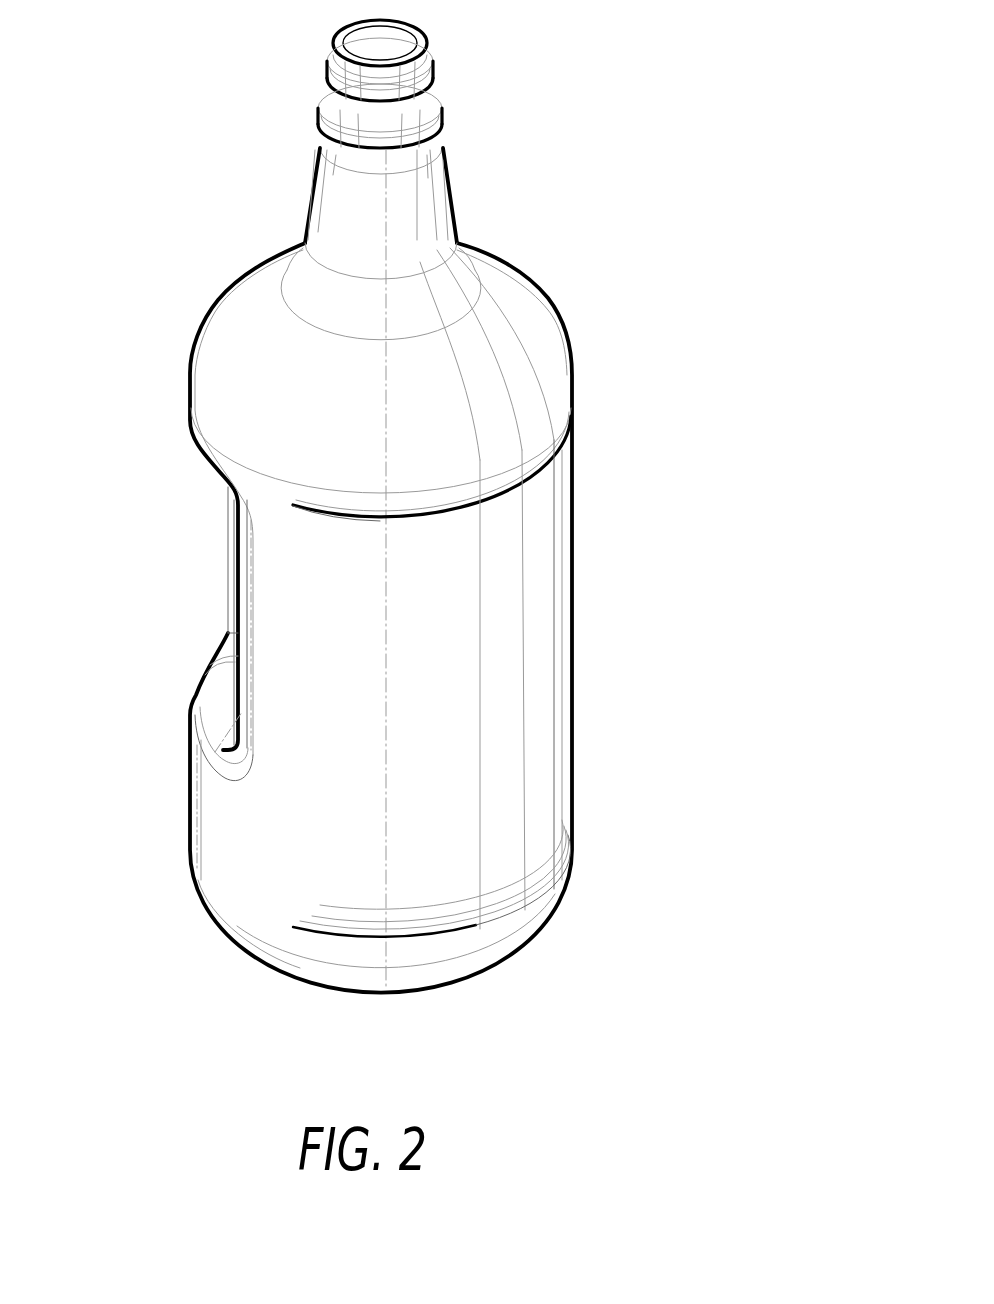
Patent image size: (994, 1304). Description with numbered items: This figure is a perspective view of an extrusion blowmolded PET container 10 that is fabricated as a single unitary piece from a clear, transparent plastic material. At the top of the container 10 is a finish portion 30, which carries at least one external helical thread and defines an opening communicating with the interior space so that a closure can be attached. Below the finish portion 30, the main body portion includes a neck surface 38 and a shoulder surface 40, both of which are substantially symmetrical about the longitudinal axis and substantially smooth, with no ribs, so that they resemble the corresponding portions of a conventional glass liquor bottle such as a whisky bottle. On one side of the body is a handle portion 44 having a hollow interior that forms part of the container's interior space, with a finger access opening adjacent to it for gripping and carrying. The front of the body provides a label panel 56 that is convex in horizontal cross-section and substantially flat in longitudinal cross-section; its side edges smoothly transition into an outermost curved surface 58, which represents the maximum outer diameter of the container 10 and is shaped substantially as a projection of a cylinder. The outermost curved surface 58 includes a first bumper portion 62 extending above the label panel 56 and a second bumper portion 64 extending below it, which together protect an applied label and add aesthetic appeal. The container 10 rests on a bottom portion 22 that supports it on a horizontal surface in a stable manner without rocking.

The container 10 is at (678, 339).
The bottom portion 22 is at (434, 990).
The finish portion 30 is at (433, 88).
The neck surface 38 is at (447, 192).
The shoulder surface 40 is at (527, 323).
The handle portion 44 is at (225, 575).
The label panel 56 is at (517, 700).
The outermost curved surface 58 is at (278, 813).
The first bumper portion 62 is at (540, 450).
The second bumper portion 64 is at (525, 898).